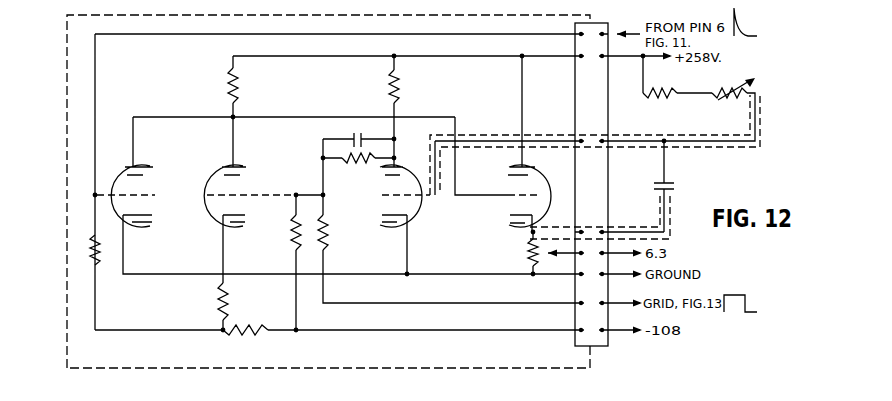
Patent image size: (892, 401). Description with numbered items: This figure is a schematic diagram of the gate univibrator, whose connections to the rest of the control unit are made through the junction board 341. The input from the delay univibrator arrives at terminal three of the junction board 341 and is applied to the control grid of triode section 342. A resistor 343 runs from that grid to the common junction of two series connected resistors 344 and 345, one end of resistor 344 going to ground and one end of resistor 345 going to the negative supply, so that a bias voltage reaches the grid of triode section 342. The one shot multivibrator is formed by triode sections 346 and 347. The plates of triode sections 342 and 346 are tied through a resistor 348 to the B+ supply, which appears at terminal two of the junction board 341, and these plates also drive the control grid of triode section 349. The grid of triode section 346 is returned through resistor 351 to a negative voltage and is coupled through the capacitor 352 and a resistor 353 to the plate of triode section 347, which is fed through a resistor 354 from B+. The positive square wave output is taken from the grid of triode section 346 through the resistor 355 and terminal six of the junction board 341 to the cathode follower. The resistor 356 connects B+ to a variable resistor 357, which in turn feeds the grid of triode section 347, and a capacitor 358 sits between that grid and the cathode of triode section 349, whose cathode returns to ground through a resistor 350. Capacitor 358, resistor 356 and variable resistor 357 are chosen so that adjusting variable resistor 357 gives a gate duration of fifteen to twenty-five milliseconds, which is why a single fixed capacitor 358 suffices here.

The junction board 341 is at (600, 23).
The triode section 342 is at (126, 166).
The resistor 343 is at (98, 262).
The resistor 344 is at (226, 301).
The resistor 345 is at (244, 333).
The triode section 346 is at (222, 166).
The triode section 347 is at (393, 167).
The resistor 348 is at (240, 88).
The triode section 349 is at (526, 170).
The resistor 350 is at (528, 252).
The resistor 351 is at (292, 232).
The capacitor 352 is at (353, 136).
The resistor 353 is at (358, 164).
The resistor 354 is at (400, 89).
The resistor 355 is at (327, 232).
The resistor 356 is at (666, 97).
The variable resistor 357 is at (733, 82).
The capacitor 358 is at (680, 174).